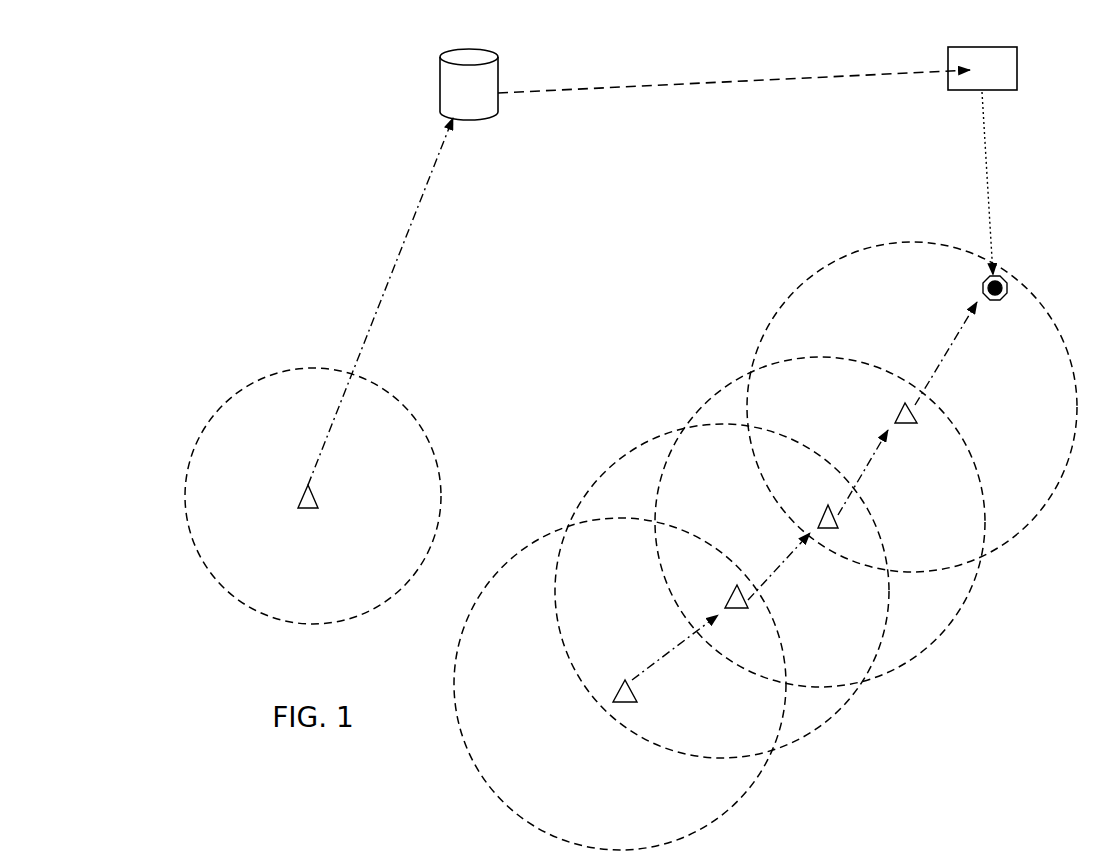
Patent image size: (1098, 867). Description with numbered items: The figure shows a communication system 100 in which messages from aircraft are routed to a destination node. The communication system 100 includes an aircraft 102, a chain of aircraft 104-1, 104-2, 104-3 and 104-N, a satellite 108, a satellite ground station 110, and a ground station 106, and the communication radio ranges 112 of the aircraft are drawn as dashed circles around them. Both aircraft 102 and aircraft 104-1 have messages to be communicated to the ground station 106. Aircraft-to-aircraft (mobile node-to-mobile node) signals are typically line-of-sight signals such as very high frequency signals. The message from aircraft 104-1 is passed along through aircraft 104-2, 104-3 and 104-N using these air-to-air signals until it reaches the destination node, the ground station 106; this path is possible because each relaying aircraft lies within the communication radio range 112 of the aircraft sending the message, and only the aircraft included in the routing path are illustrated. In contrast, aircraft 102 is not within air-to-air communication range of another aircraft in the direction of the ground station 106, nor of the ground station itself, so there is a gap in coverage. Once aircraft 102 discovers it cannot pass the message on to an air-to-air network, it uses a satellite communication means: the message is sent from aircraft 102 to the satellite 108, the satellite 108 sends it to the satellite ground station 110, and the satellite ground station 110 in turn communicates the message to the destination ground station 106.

The communication system 100 is at (930, 552).
The aircraft 102 is at (305, 508).
The aircraft 104-1 is at (630, 680).
The aircraft 104-2 is at (748, 608).
The aircraft 104-3 is at (818, 516).
The aircraft 104-N is at (915, 420).
The ground station 106 is at (1003, 300).
The satellite 108 is at (485, 81).
The satellite ground station 110 is at (982, 57).
The communication radio ranges 112 is at (198, 563).